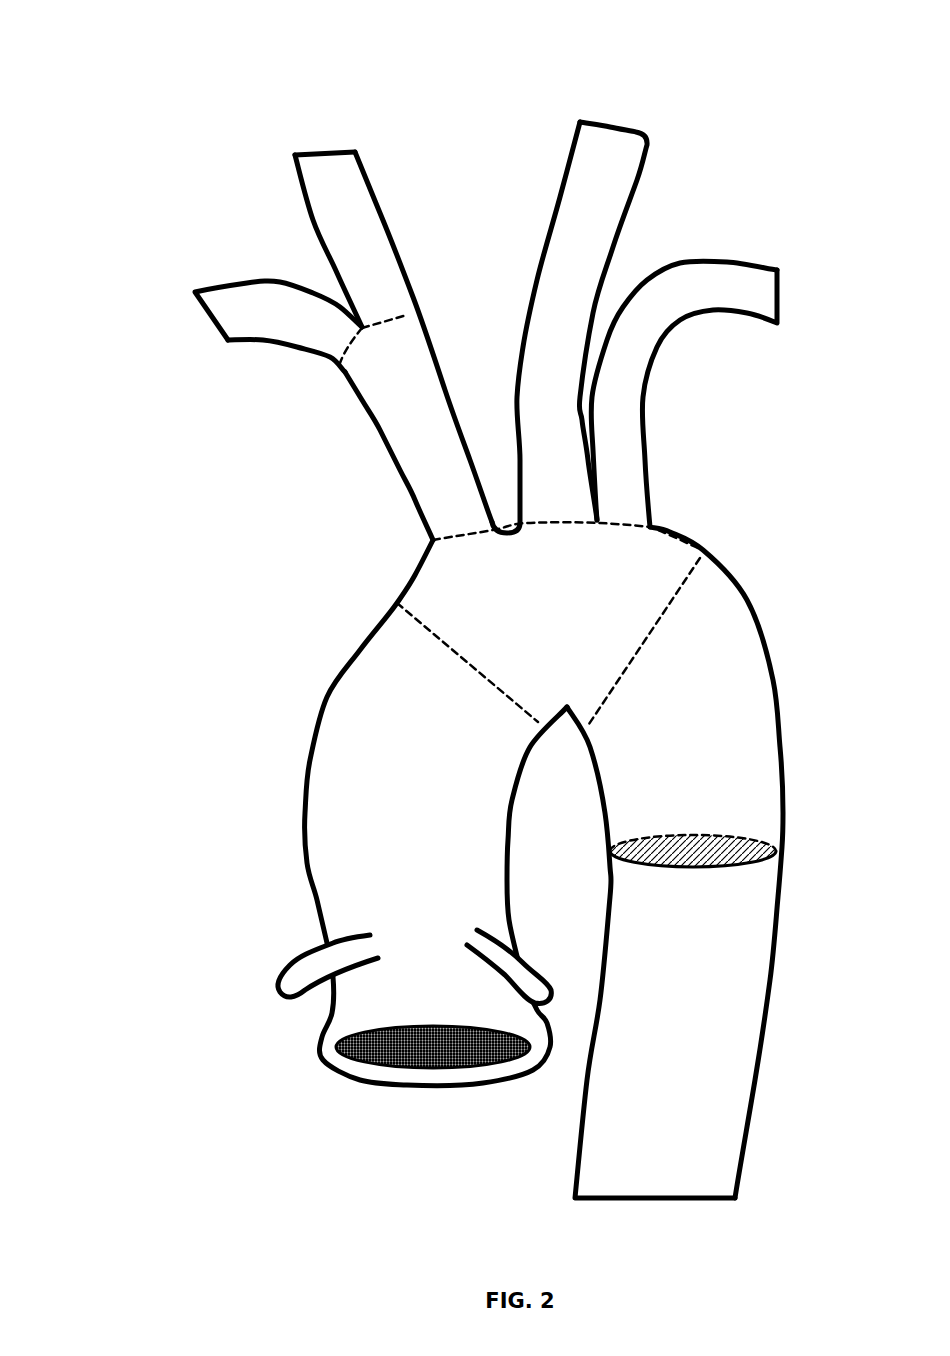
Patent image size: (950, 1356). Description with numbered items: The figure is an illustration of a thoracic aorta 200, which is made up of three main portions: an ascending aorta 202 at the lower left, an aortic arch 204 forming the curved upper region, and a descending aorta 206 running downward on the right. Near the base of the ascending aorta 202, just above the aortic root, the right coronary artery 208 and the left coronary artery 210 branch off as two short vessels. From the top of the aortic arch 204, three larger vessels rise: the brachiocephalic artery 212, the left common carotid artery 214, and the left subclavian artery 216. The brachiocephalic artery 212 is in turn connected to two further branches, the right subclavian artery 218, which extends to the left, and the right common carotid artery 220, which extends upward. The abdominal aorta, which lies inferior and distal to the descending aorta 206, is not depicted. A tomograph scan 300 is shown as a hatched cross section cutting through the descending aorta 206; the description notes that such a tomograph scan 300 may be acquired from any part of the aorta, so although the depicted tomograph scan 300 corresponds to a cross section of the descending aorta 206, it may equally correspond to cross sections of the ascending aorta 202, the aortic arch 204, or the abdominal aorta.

The thoracic aorta 200 is at (135, 44).
The ascending aorta 202 is at (442, 886).
The aortic arch 204 is at (570, 614).
The descending aorta 206 is at (715, 971).
The right coronary artery 208 is at (297, 953).
The left coronary artery 210 is at (533, 970).
The brachiocephalic artery 212 is at (430, 418).
The left common carotid artery 214 is at (617, 121).
The left subclavian artery 216 is at (737, 262).
The right subclavian artery 218 is at (203, 293).
The right common carotid artery 220 is at (327, 154).
The tomograph scan 300 is at (753, 838).